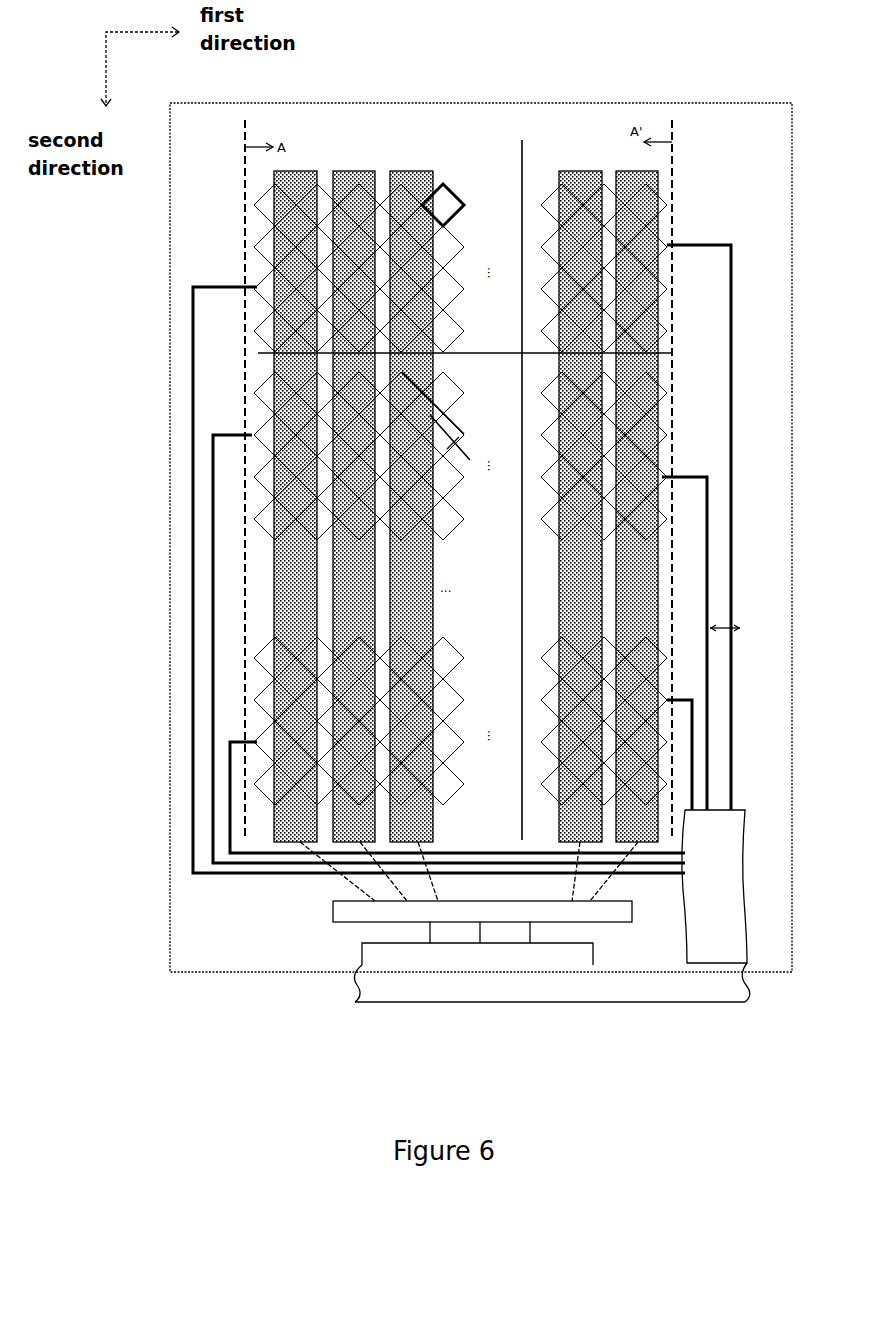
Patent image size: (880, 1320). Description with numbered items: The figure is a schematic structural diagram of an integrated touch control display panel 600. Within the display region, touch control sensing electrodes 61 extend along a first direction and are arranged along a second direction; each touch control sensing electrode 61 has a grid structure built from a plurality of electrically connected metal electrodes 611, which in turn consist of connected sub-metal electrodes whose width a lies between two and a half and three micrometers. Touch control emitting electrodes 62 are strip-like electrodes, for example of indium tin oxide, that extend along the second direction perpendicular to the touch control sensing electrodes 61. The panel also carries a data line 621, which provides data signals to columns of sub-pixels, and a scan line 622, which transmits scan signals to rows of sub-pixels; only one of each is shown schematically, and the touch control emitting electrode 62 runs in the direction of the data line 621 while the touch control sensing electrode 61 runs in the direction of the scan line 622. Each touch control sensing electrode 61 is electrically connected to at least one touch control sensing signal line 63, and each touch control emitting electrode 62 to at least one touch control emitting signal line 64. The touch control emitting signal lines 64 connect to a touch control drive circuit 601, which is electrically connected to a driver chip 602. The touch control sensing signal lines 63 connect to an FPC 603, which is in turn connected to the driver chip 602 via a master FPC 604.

The integrated touch control display panel 600 is at (752, 47).
The touch control sensing electrode 61 is at (457, 332).
The metal electrode 611 is at (465, 204).
The touch control emitting electrode 62 is at (433, 572).
The data line 621 is at (523, 162).
The scan line 622 is at (480, 358).
The touch control sensing signal line 63 is at (733, 582).
The touch control emitting signal line 64 is at (437, 899).
The touch control drive circuit 601 is at (317, 921).
The driver chip 602 is at (594, 952).
The FPC 603 is at (737, 862).
The master FPC 604 is at (716, 1008).